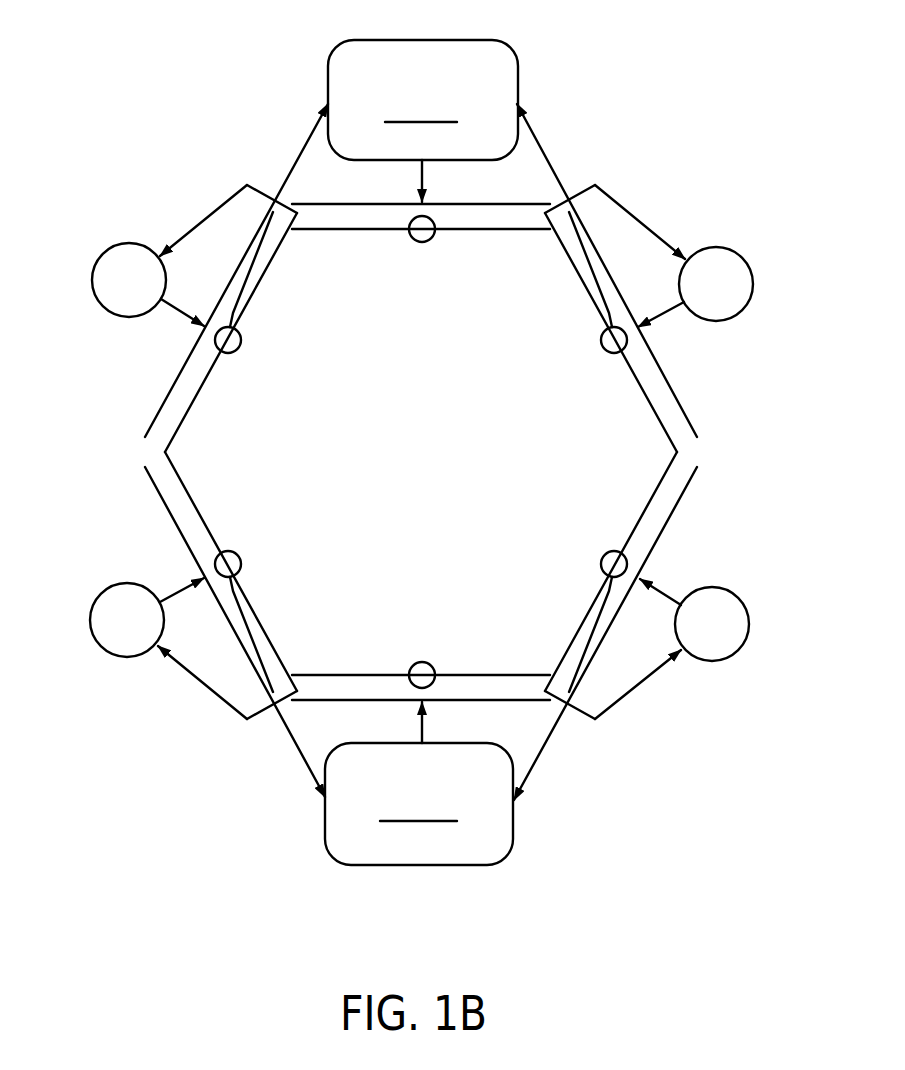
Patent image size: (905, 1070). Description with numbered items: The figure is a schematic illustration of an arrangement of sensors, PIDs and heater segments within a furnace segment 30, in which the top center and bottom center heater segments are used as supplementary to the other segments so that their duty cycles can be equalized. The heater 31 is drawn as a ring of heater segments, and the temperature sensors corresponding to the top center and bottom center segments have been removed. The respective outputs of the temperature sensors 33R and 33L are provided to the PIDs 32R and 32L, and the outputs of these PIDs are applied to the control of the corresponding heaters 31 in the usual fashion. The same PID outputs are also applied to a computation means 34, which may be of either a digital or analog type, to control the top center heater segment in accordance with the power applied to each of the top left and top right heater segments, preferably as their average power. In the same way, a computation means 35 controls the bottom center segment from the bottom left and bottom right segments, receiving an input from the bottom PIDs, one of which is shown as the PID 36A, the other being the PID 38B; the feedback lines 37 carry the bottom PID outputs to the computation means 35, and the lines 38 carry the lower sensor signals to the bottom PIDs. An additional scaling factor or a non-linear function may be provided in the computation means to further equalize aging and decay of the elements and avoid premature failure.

The furnace segment 30 is at (638, 139).
The heater 31 is at (482, 203).
The PID 32L is at (100, 257).
The PID 32R is at (746, 267).
The temperature sensor 33L is at (238, 349).
The temperature sensor 33R is at (604, 350).
The computation means 34 is at (510, 55).
The computation means 35 is at (490, 863).
The bottom-right PID controller 36A is at (745, 611).
The feedback lines to non-linear block 37 is at (290, 758).
The thermocouple signal lines 38 is at (208, 692).
The bottom-left PID controller 38B is at (100, 593).